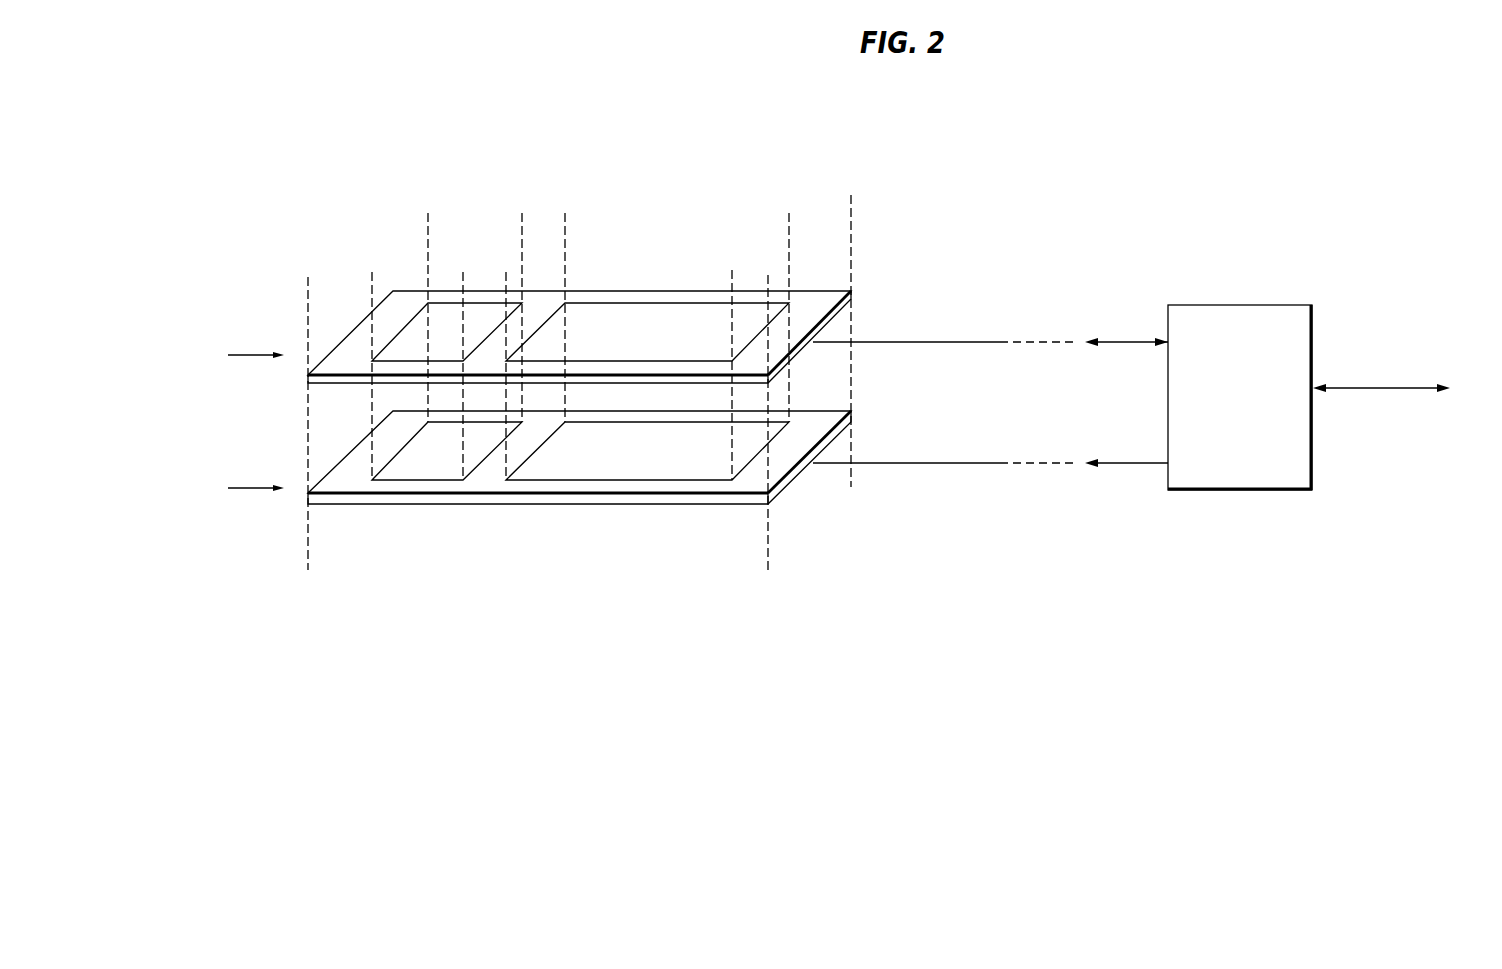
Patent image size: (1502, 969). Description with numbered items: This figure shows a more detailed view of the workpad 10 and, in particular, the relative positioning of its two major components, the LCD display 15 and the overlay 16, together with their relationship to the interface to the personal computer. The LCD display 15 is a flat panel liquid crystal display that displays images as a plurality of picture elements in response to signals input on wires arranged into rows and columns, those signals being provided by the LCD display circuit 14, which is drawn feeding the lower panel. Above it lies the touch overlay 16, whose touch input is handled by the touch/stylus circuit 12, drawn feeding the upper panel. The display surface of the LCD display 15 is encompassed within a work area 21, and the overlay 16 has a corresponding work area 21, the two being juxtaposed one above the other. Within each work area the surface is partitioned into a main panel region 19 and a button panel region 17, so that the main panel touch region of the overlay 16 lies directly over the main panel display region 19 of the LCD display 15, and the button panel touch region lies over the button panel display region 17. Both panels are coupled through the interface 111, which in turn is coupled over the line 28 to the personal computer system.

The workpad 10 is at (920, 188).
The touch/stylus circuit 12 is at (221, 317).
The LCD display circuit 14 is at (220, 448).
The LCD display 15 is at (559, 533).
The overlay 16 is at (628, 232).
The button panel display region 17 is at (418, 313).
The main panel display region 19 is at (684, 303).
The work area 21 is at (833, 318).
The line 28 is at (1343, 392).
The interface 111 is at (1240, 397).